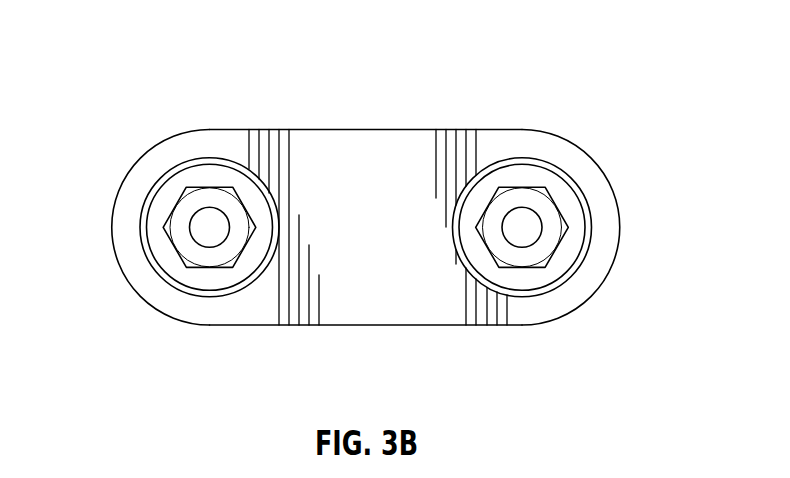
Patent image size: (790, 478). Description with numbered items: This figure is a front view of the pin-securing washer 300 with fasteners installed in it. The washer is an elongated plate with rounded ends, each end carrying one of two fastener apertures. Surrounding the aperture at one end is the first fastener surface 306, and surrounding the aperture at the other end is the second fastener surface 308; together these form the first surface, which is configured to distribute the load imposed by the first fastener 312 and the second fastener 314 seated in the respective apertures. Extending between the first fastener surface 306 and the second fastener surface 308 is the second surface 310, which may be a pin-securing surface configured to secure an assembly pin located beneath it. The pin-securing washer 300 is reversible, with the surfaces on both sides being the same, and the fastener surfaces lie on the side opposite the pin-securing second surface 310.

The pin-securing washer 300 is at (365, 218).
The first fastener surface 306 is at (128, 242).
The second fastener surface 308 is at (603, 231).
The second surface 310 is at (447, 102).
The first fastener 312 is at (207, 279).
The second fastener 314 is at (523, 280).